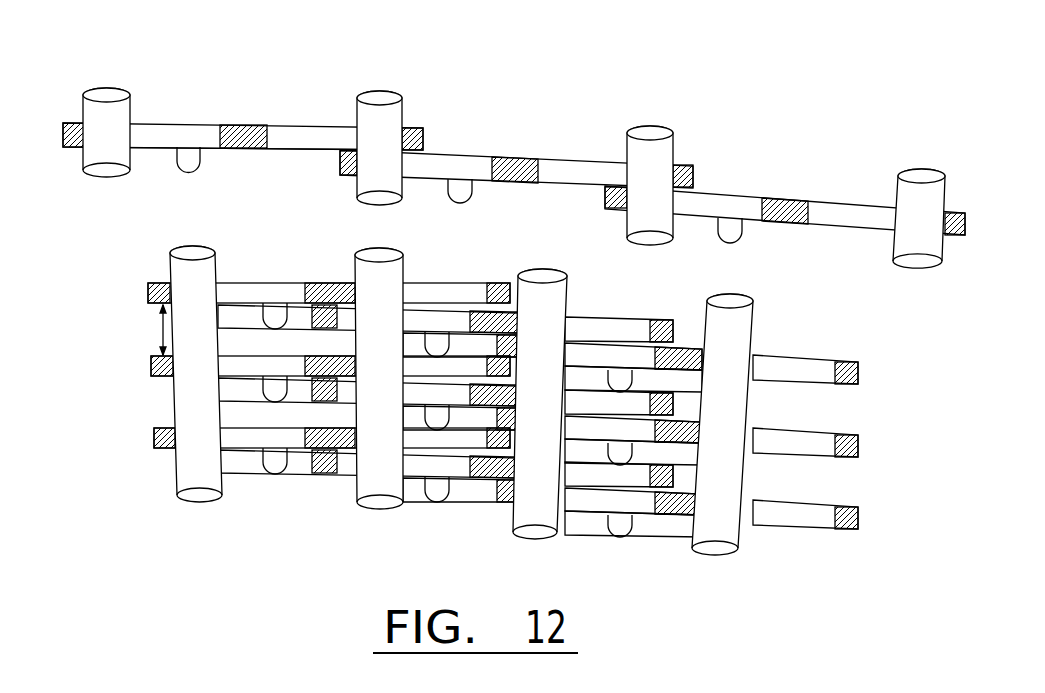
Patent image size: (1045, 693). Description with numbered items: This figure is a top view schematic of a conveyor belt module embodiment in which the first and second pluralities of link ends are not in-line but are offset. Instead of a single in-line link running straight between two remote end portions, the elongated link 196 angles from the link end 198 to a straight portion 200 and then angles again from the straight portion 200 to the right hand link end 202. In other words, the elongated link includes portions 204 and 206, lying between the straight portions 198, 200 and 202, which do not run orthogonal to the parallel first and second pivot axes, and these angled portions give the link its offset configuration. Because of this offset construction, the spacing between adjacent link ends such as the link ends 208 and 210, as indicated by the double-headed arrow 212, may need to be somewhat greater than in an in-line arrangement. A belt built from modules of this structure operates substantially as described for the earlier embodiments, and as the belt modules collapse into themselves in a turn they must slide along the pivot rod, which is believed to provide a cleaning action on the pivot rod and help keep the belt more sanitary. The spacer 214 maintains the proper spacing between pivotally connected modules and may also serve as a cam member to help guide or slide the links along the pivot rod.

The elongated link 196 is at (501, 144).
The link end 198 is at (63, 125).
The straight portion 200 is at (245, 127).
The right hand link end 202 is at (405, 127).
The angled portion of elongated link 204 is at (147, 123).
The angled portion of elongated link 206 is at (302, 150).
The link end 208 is at (151, 363).
The link end 210 is at (146, 292).
The double-headed arrow 212 is at (160, 328).
The spacer 214 is at (435, 421).